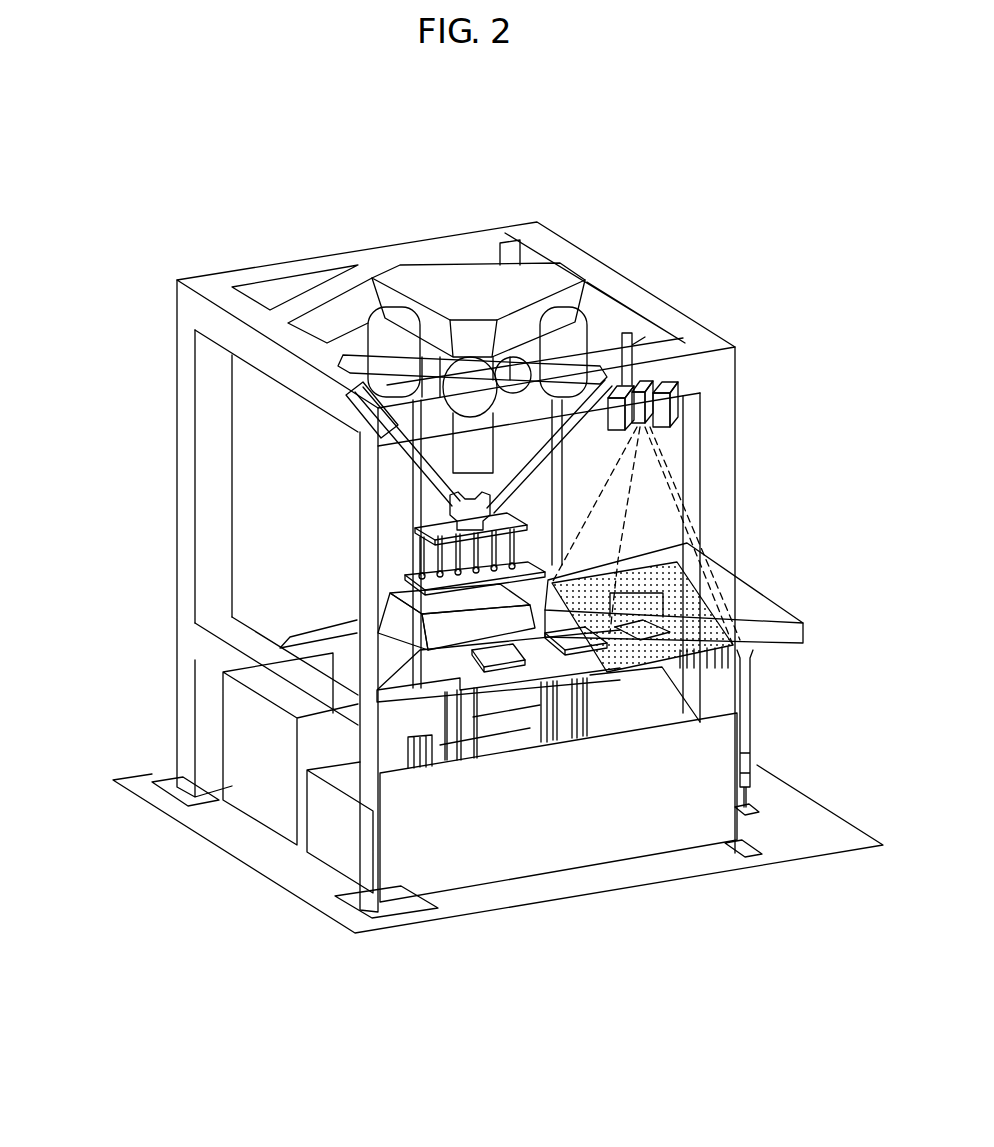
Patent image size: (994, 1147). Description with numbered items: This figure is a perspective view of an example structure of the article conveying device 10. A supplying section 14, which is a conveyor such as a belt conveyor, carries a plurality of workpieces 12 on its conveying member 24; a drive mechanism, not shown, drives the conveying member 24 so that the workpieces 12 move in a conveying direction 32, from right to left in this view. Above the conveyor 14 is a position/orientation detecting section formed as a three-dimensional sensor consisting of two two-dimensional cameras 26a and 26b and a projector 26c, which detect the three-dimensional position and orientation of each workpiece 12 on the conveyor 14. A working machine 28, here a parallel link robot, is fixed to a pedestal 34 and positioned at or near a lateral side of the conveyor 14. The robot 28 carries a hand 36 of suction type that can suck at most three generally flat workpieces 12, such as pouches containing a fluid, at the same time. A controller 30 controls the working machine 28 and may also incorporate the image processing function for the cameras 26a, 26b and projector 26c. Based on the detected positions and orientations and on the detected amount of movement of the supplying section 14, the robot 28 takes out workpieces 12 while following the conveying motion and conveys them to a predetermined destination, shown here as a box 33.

The article conveying device 10 is at (158, 249).
The workpiece 12 is at (538, 660).
The supplying section 14 is at (791, 669).
The conveying member 24 is at (465, 663).
The 2-D camera 26a is at (663, 385).
The 2-D camera 26b is at (627, 413).
The projector 26c is at (637, 387).
The working machine 28 is at (484, 246).
The controller 30 is at (245, 747).
The conveying direction 32 is at (792, 590).
The box 33 is at (397, 622).
The pedestal 34 is at (181, 393).
The hand 36 is at (412, 550).